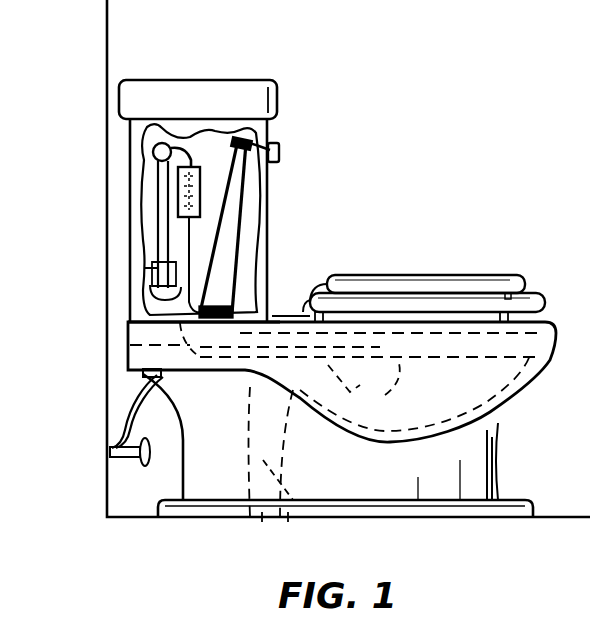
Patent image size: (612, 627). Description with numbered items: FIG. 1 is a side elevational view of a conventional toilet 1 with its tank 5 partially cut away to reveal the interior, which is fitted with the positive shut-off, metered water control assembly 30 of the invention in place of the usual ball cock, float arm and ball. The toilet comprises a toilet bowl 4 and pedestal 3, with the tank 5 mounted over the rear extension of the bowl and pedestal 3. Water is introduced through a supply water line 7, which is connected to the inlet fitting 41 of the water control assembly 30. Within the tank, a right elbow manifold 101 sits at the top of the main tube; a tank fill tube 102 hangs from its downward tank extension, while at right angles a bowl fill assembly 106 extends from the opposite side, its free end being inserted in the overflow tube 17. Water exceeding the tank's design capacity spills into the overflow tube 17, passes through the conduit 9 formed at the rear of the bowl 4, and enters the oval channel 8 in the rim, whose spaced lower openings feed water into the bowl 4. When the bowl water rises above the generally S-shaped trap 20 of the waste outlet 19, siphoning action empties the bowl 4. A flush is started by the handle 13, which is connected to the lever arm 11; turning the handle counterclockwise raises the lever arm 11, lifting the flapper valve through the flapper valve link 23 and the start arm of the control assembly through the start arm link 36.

The toilet 1 is at (378, 206).
The pedestal 3 is at (470, 463).
The toilet bowl 4 is at (473, 393).
The tank 5 is at (130, 137).
The supply water line 7 is at (126, 414).
The oval channel 8 is at (527, 347).
The conduit 9 is at (99, 355).
The lever arm 11 is at (243, 141).
The handle 13 is at (281, 151).
The overflow tube 17 is at (193, 248).
The waste outlet 19 is at (267, 522).
The trap 20 is at (290, 441).
The flapper valve link 23 is at (249, 184).
The water control assembly 30 is at (157, 271).
The start arm link 36 is at (263, 217).
The inlet fitting 41 is at (143, 374).
The right elbow manifold 101 is at (161, 143).
The tank fill tube 102 is at (158, 216).
The bowl fill assembly 106 is at (190, 142).